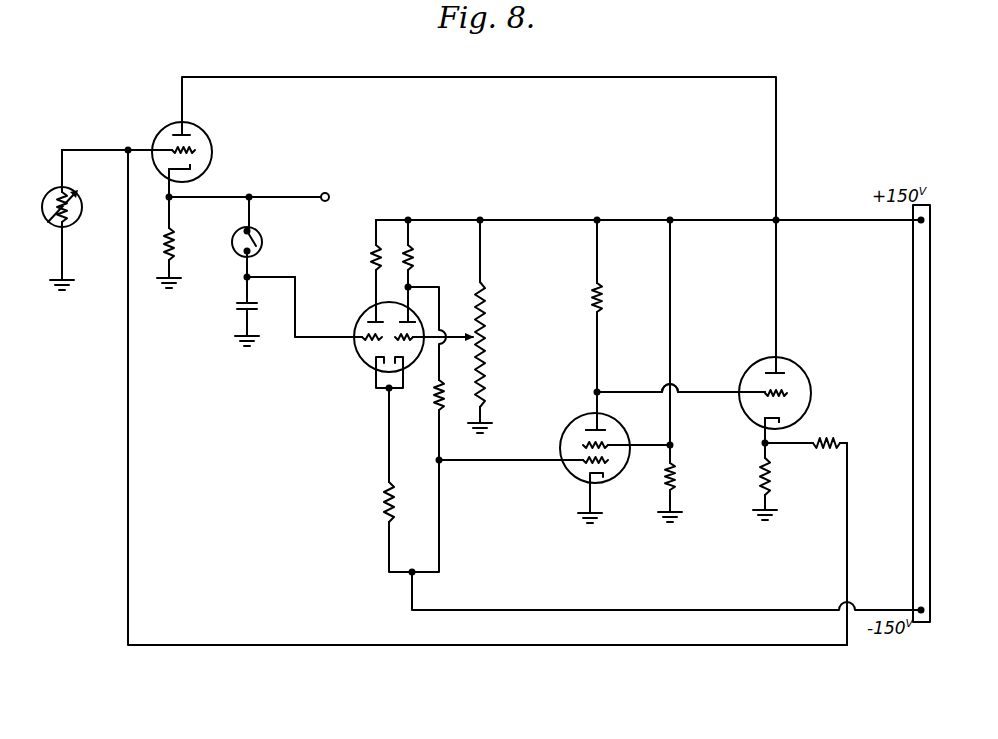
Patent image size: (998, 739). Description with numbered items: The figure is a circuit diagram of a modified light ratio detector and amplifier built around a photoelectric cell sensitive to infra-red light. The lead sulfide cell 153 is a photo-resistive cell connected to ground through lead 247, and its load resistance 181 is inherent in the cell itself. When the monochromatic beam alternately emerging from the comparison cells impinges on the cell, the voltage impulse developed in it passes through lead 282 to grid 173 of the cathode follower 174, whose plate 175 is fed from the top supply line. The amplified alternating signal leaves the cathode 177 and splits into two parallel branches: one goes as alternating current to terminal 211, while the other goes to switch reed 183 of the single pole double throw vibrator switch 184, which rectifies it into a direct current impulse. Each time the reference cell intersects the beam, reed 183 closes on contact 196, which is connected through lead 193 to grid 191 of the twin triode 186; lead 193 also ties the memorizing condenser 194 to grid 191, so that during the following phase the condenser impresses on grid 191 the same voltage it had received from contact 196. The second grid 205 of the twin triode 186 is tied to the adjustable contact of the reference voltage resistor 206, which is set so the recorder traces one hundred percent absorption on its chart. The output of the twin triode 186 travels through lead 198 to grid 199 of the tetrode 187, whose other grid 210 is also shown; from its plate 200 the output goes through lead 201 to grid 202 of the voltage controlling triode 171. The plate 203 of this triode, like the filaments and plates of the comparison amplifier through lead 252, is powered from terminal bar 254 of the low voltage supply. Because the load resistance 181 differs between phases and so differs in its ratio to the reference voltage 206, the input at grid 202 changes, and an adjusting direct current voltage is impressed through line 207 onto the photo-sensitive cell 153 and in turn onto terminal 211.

The lead 282 is at (99, 149).
The anode of tube 174 175 is at (191, 135).
The grid 173 is at (197, 149).
The cathode follower 174 is at (211, 158).
The cathode 177 is at (191, 171).
The terminal 211 is at (328, 195).
The lead sulfide cell 153 is at (42, 207).
The photo-resistive cell load resistance 181 is at (82, 214).
The lead 247 is at (63, 252).
The switch reed 183 is at (257, 239).
The vibrator switch 184 is at (263, 243).
The contact 196 is at (244, 278).
The memorizing condenser 194 is at (239, 311).
The lead 193 is at (296, 307).
The second grid section of tube 186 205 is at (409, 322).
The grid 191 is at (360, 340).
The twin triode 186 is at (357, 358).
The reference voltage resistor 206 is at (485, 353).
The lead 252 is at (560, 214).
The plate 200 is at (589, 430).
The first grid of tube 187 210 is at (583, 445).
The grid 199 is at (585, 464).
The tetrode 187 is at (621, 478).
The lead 198 is at (507, 462).
The lead 201 is at (700, 392).
The plate 203 is at (785, 372).
The grid 202 is at (763, 400).
The voltage controlling vacuum tube 171 is at (811, 409).
The line 207 is at (849, 548).
The terminal bar 254 is at (932, 430).